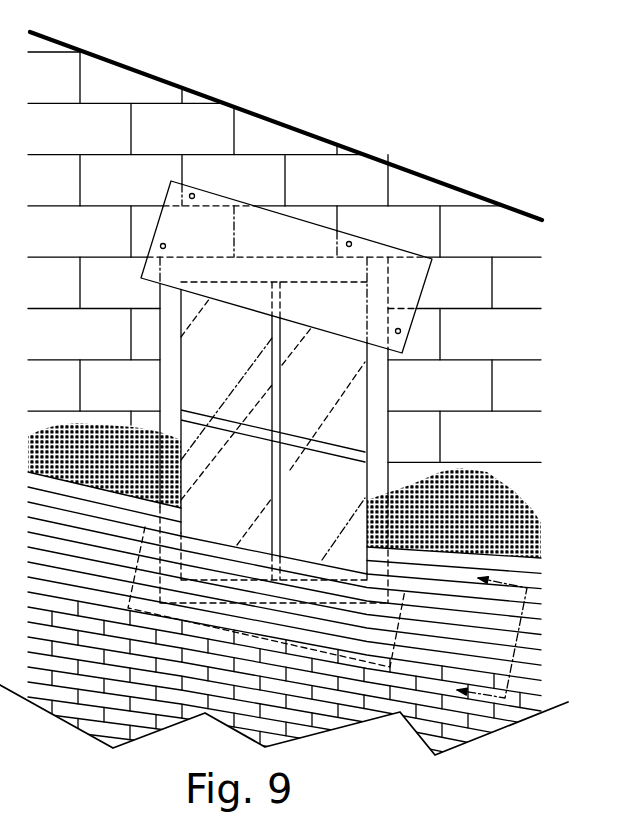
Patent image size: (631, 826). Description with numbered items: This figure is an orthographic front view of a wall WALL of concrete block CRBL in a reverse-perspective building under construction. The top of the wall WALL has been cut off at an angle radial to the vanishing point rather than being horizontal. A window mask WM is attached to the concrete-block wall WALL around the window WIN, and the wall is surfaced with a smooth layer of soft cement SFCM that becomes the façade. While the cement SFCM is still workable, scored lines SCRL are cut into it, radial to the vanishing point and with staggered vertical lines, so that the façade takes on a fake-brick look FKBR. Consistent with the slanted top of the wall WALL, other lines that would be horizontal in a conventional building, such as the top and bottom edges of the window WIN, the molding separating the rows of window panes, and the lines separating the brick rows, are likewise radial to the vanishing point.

The concrete block CRBL is at (123, 82).
The wall WALL is at (360, 90).
The window mask WM is at (373, 247).
The window WIN is at (358, 397).
The soft cement SFCM is at (512, 512).
The scored lines SCRL is at (515, 553).
The fake brick FKBR is at (167, 717).